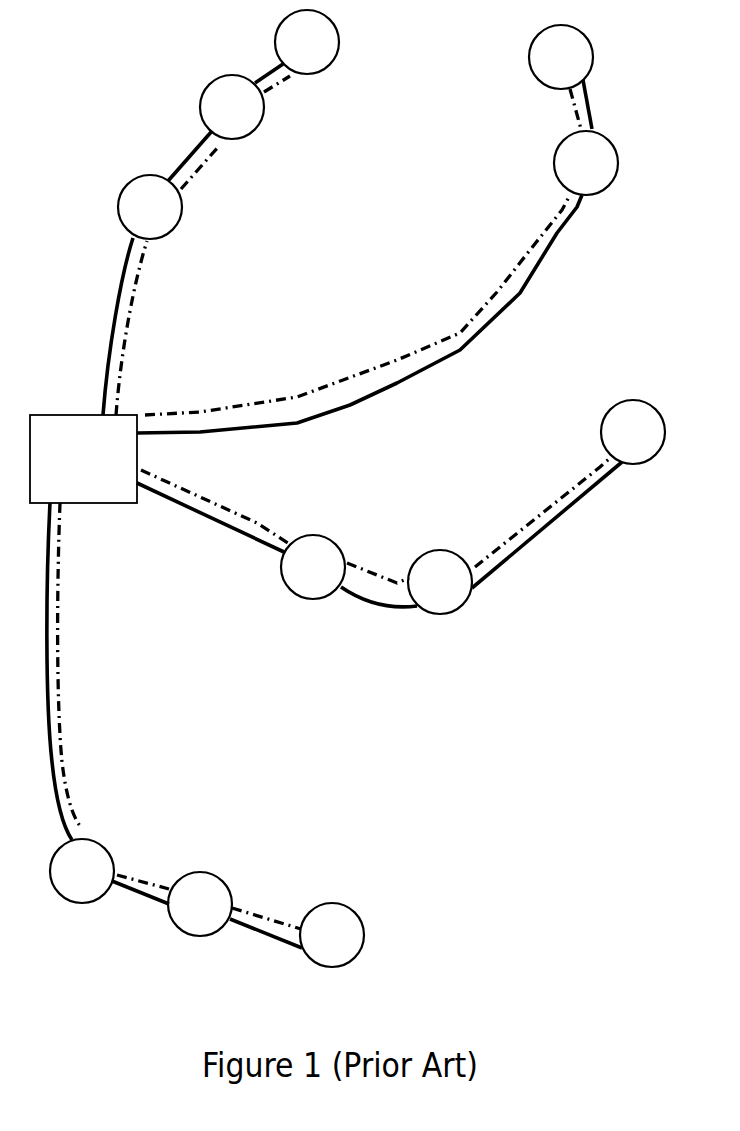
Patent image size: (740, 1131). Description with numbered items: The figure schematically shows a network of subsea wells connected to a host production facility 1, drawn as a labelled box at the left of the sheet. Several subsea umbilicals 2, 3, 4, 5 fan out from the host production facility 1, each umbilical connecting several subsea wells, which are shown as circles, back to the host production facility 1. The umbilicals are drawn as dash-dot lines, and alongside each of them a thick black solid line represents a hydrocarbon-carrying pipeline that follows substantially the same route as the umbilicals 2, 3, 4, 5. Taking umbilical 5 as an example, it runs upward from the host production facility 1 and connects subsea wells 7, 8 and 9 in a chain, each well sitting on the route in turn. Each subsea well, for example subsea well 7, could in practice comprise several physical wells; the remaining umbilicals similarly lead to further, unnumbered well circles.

The host production facility 1 is at (91, 447).
The subsea umbilical 2 is at (69, 692).
The subsea umbilical 3 is at (550, 488).
The subsea umbilical 4 is at (520, 267).
The subsea umbilical 5 is at (221, 212).
The subsea well 7 is at (150, 207).
The subsea well 8 is at (232, 107).
The subsea well 9 is at (307, 42).